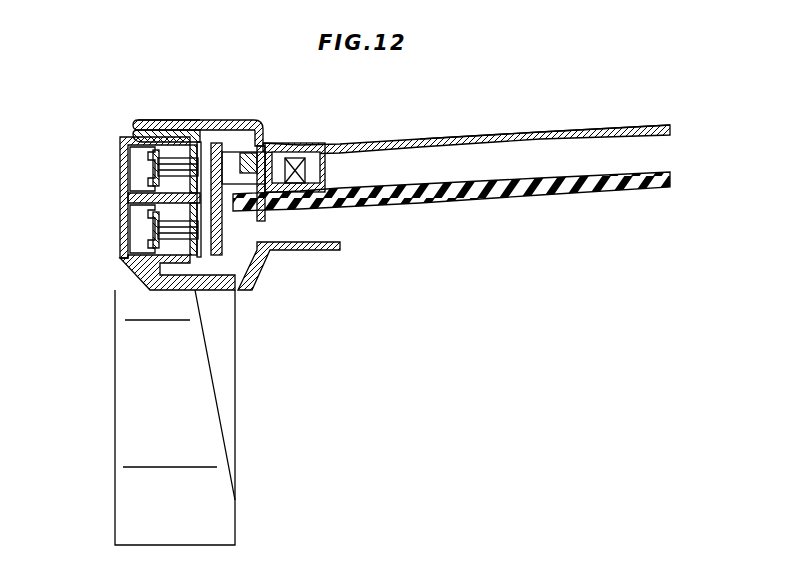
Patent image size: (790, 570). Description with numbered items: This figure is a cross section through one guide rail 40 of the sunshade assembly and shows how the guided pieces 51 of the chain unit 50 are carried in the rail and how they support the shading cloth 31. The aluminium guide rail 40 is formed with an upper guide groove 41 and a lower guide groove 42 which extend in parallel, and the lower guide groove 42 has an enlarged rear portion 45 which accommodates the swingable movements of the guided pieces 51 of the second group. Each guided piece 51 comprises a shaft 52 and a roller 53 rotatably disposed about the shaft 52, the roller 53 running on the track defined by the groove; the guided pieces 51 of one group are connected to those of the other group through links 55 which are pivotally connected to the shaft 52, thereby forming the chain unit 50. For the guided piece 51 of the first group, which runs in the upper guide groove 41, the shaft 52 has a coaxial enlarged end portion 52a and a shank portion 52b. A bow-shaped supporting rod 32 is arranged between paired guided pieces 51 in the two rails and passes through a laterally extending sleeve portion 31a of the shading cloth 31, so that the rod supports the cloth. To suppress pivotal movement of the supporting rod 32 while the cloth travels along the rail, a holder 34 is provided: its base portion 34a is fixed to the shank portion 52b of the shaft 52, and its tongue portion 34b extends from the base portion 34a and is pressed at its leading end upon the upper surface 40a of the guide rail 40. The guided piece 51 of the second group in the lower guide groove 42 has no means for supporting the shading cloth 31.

The shading cloth 31 is at (456, 196).
The sleeve portion 31a is at (545, 128).
The supporting rod 32 is at (485, 139).
The holder 34 is at (196, 112).
The base portion 34a is at (262, 146).
The tongue portion 34b is at (155, 128).
The guide rail 40 is at (116, 152).
The upper surface 40a is at (173, 138).
The upper guide groove 41 is at (118, 197).
The lower guide groove 42 is at (135, 262).
The enlarged rear portion 45 is at (130, 393).
The chain unit 50 is at (236, 248).
The guided piece 51 is at (117, 175).
The shaft 52 is at (143, 172).
The enlarged end portion 52a is at (310, 160).
The shank portion 52b is at (275, 150).
The roller 53 is at (150, 128).
The link 55 is at (235, 140).